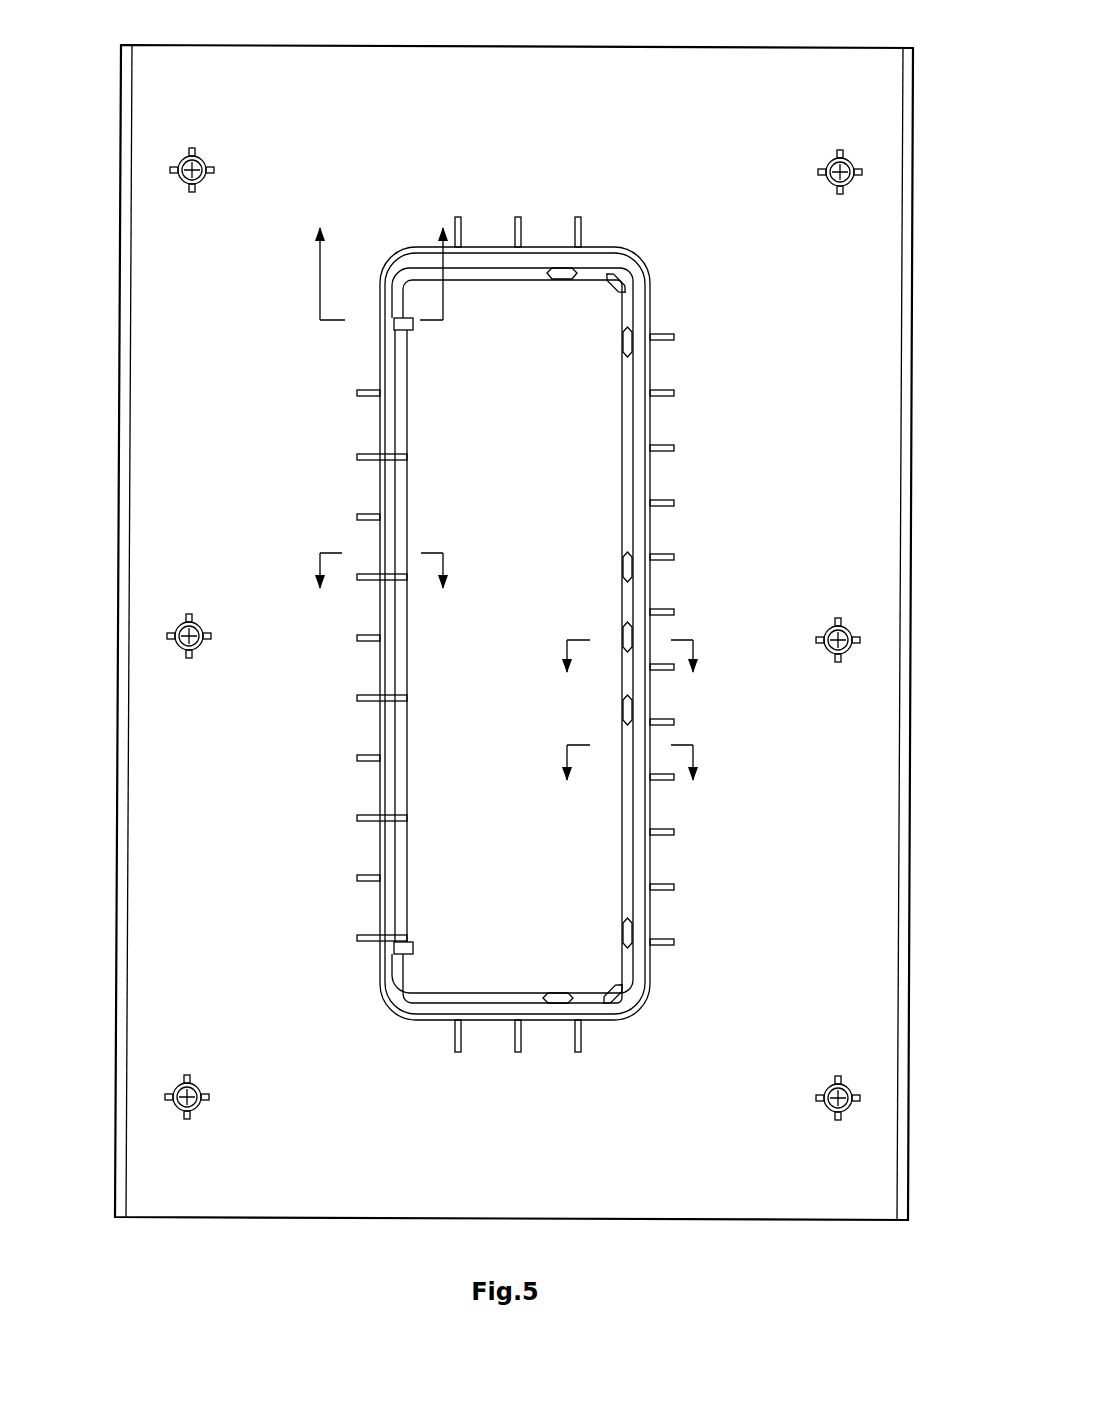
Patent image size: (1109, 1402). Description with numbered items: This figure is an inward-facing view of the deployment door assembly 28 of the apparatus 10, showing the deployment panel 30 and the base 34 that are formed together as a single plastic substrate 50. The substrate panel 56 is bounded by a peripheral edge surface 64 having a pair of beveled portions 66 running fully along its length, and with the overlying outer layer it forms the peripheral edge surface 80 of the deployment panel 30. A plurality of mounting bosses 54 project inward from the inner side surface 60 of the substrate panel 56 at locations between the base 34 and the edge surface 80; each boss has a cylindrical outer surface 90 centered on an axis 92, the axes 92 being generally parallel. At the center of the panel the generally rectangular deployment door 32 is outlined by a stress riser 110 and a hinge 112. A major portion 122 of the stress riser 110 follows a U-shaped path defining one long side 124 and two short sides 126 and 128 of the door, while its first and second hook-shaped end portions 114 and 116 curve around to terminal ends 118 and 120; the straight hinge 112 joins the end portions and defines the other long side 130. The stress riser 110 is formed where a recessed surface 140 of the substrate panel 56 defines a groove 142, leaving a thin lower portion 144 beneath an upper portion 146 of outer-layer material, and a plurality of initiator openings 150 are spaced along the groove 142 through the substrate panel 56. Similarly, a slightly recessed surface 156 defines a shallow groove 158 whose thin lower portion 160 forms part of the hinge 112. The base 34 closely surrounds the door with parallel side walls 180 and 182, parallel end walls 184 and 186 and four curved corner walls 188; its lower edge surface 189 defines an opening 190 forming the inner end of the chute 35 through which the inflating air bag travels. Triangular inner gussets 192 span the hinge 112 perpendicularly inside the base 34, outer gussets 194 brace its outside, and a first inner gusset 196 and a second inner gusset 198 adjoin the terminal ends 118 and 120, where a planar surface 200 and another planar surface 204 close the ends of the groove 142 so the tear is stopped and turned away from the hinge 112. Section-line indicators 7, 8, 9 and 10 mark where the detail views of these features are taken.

The deployment door assembly 28 is at (106, 57).
The deployment panel 30 is at (257, 46).
The deployment door 32 is at (433, 490).
The base 34 is at (378, 535).
The chute 35 is at (495, 718).
The substrate 50 is at (118, 178).
The mounting bosses 54 is at (178, 157).
The substrate panel 56 is at (118, 220).
The inner side surface 60 is at (160, 258).
The peripheral edge surface 64 is at (362, 45).
The beveled portions 66 is at (126, 296).
The peripheral edge surface 80 is at (122, 342).
The cylindrical outer surface 90 is at (205, 158).
The axis 92 is at (205, 165).
The stress riser 110 is at (643, 365).
The hinge 112 is at (383, 375).
The first end portion 114 is at (383, 302).
The second end portion 116 is at (390, 962).
The first terminal end 118 is at (405, 325).
The second terminal end 120 is at (412, 946).
The major portion 122 is at (637, 420).
The long side 124 is at (624, 458).
The short side 126 is at (498, 282).
The short side 128 is at (487, 990).
The long side 130 is at (407, 428).
The recessed surface 140 is at (630, 490).
The groove 142 is at (621, 508).
The lower portion 144 is at (625, 532).
The upper portion 146 is at (628, 560).
The initiator openings 150 is at (612, 284).
The recessed surface 156 is at (397, 732).
The groove 158 is at (392, 782).
The lower portion 160 is at (405, 808).
The side wall 180 is at (652, 862).
The side wall 182 is at (382, 858).
The end wall 184 is at (532, 245).
The end wall 186 is at (545, 1030).
The corner walls 188 is at (392, 262).
The lower edge surface 189 is at (380, 655).
The opening 190 is at (392, 677).
The inner gussets 192 is at (400, 697).
The outer gussets 194 is at (358, 880).
The first inner gusset 196 is at (402, 340).
The second inner gusset 198 is at (395, 932).
The surface 200 is at (405, 322).
The planar surface 204 is at (385, 948).
The apparatus 10 is at (382, 253).
The section line 9- 9 is at (381, 583).
The section line 8- 8 is at (629, 671).
The section line 7- 7 is at (629, 777).